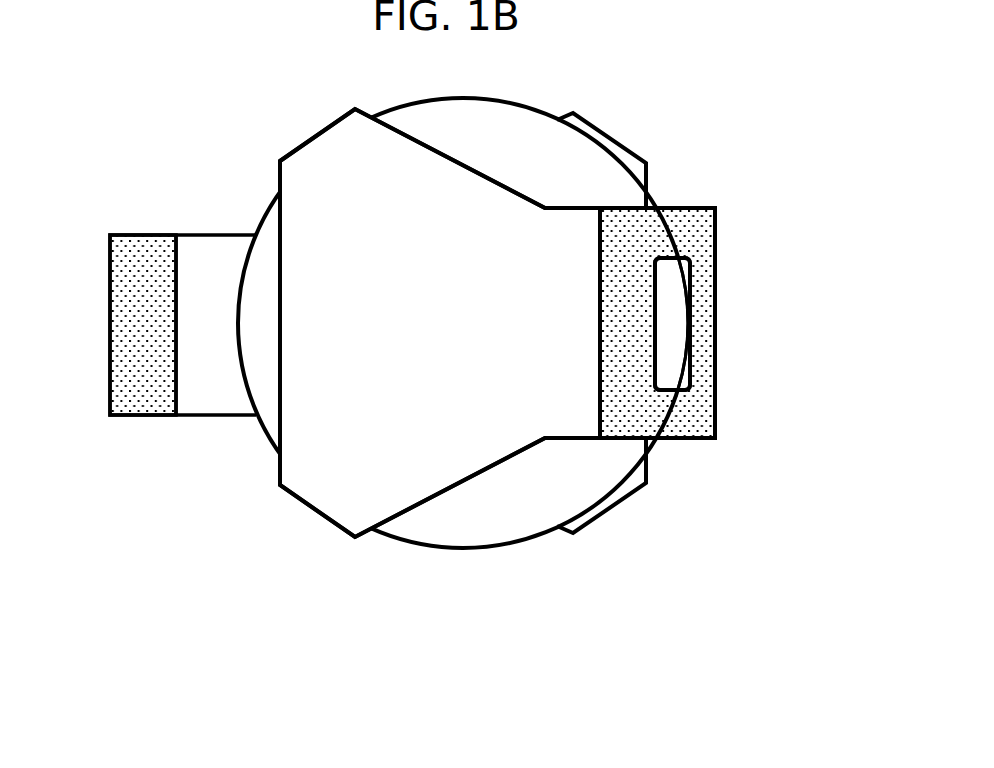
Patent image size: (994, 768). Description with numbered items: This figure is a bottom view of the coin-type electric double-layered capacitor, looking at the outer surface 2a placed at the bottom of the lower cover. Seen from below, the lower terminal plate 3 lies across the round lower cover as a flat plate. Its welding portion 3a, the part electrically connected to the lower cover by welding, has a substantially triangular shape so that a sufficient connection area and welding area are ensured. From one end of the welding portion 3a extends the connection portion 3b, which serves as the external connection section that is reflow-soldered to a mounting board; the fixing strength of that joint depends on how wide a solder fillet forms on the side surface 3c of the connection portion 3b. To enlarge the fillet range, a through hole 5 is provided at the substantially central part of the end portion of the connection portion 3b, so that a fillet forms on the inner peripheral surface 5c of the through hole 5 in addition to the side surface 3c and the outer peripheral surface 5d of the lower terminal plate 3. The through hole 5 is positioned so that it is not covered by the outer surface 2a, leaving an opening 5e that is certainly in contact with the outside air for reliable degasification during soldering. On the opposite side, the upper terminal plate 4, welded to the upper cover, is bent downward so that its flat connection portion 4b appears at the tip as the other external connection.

The outer surface 2a is at (580, 170).
The lower terminal plate 3 is at (720, 600).
The welding portion 3a is at (447, 373).
The connection portion 3b is at (687, 415).
The side surface 3c is at (657, 440).
The upper terminal plate 4 is at (202, 247).
The connection portion 4b is at (140, 392).
The through hole 5 is at (665, 318).
The inner peripheral surface 5c is at (690, 276).
The outer peripheral surface 5d is at (680, 208).
The opening 5e is at (689, 383).